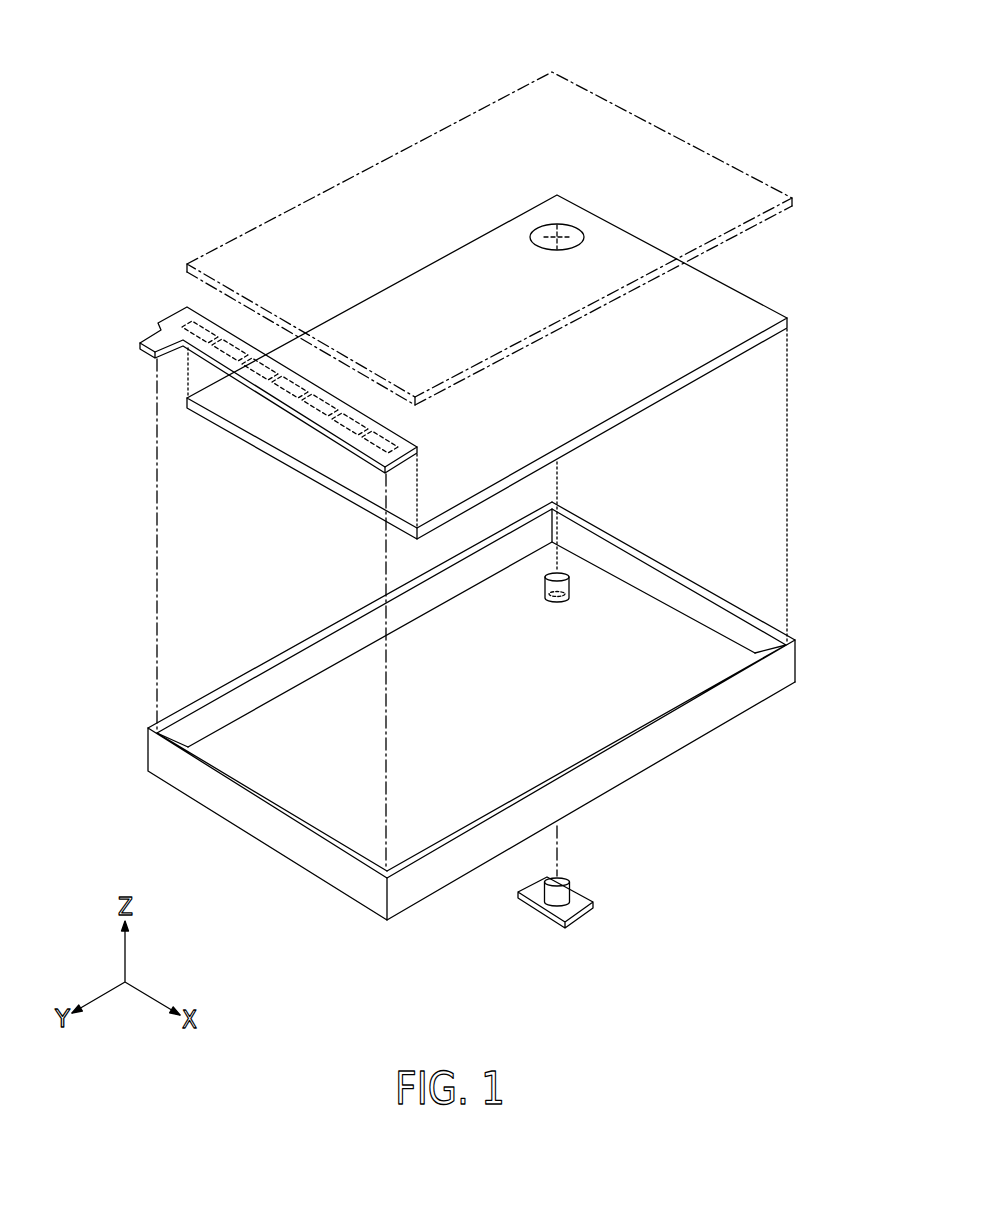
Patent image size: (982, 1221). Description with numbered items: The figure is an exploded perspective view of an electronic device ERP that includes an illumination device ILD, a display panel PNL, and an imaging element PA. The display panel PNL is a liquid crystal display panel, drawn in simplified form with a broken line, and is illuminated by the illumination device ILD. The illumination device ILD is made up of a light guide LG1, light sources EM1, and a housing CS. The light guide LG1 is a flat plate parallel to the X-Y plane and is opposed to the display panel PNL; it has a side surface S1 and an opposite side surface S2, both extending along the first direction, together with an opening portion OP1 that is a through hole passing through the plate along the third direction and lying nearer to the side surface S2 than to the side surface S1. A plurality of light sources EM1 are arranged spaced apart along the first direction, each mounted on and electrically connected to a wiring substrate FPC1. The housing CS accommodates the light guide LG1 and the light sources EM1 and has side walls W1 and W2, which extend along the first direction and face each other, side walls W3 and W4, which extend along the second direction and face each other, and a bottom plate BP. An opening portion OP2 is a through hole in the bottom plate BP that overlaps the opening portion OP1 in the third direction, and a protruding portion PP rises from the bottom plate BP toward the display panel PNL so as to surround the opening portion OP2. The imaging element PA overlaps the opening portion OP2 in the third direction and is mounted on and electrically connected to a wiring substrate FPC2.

The electronic device ERP is at (448, 60).
The display panel PNL is at (625, 110).
The opening portion OP1 is at (565, 234).
The light guide LG1 is at (723, 283).
The side surface S2 is at (762, 298).
The side surface S1 is at (273, 458).
The wiring substrate FPC1 is at (170, 323).
The light source EM1 is at (188, 355).
The illumination device ILD is at (337, 928).
The housing CS is at (147, 752).
The side wall W1 is at (292, 813).
The side wall W2 is at (745, 615).
The side wall W3 is at (320, 630).
The side wall W4 is at (588, 757).
The bottom plate BP is at (253, 733).
The protruding portion PP is at (543, 585).
The opening portion OP2 is at (557, 607).
The wiring substrate FPC2 is at (587, 920).
The imaging element PA is at (542, 916).